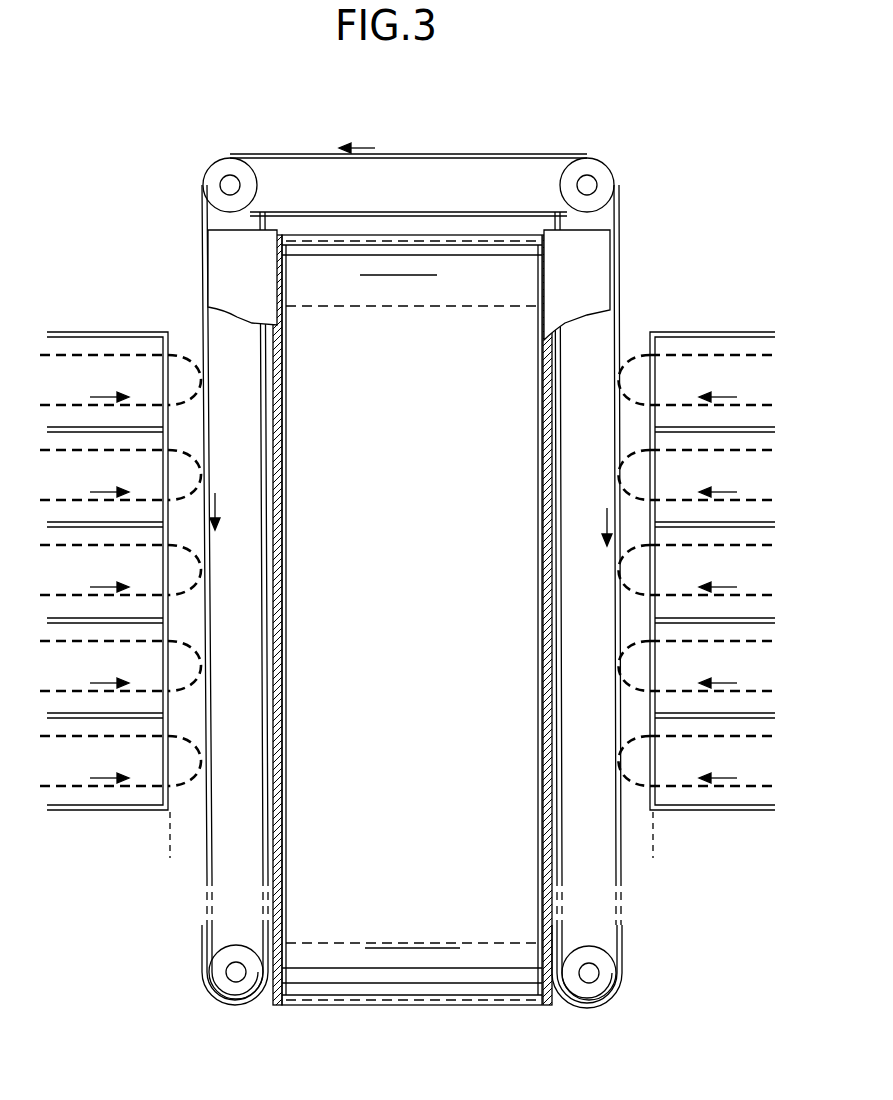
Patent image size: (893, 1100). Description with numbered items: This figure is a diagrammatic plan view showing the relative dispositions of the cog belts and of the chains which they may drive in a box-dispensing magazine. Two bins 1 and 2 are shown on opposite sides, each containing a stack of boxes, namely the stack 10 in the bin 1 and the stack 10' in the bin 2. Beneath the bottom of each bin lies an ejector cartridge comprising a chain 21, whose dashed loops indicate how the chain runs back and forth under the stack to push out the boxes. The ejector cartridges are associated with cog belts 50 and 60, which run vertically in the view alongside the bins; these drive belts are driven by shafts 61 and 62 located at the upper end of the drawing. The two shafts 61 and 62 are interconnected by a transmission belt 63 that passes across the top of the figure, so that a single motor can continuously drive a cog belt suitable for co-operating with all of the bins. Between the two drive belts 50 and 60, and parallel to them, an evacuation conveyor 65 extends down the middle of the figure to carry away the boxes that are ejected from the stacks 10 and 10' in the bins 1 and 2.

The bin 1 is at (63, 326).
The bin 2 is at (721, 326).
The stack of rectangular boxes 10 is at (104, 522).
The stack of boxes 10' is at (699, 522).
The chain 21 is at (177, 347).
The cog belt 50 is at (212, 818).
The cog belt 60 is at (562, 847).
The shaft 61 is at (230, 185).
The shaft 62 is at (597, 185).
The transmission belt 63 is at (462, 152).
The evacuation conveyor 65 is at (320, 822).